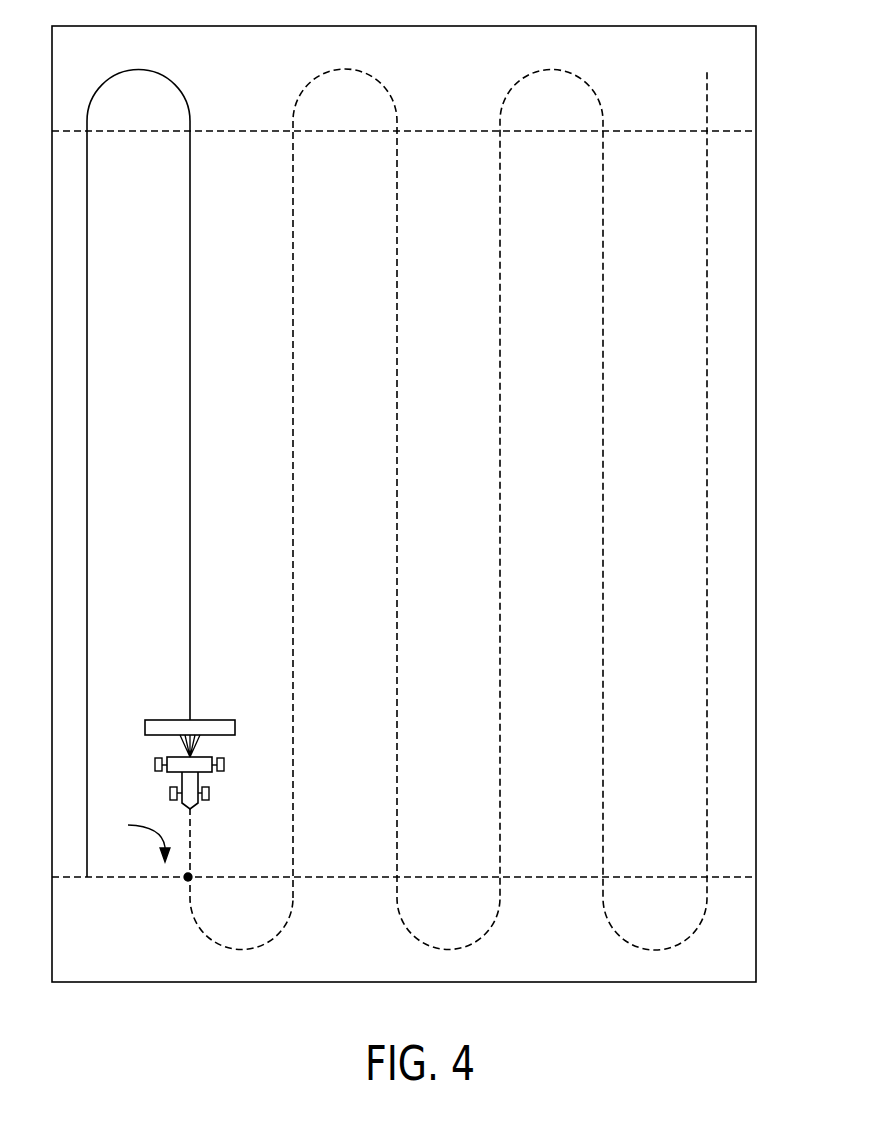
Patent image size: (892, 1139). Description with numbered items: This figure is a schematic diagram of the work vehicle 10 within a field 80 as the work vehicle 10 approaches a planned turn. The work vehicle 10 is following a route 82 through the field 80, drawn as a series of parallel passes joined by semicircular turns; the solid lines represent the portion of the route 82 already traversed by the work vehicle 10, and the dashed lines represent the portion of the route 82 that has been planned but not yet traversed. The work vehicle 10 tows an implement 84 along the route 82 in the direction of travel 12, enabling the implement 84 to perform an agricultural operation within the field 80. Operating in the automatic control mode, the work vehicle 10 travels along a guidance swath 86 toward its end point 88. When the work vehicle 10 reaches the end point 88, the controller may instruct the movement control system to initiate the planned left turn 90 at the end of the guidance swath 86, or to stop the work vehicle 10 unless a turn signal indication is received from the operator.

The field 80 is at (658, 371).
The route 82 is at (292, 407).
The implement 84 is at (213, 728).
The guidance swath 86 is at (190, 588).
The end point 88 is at (186, 880).
The left turn 90 is at (285, 922).
The work vehicle 10 is at (199, 763).
The direction of travel 12 is at (133, 837).